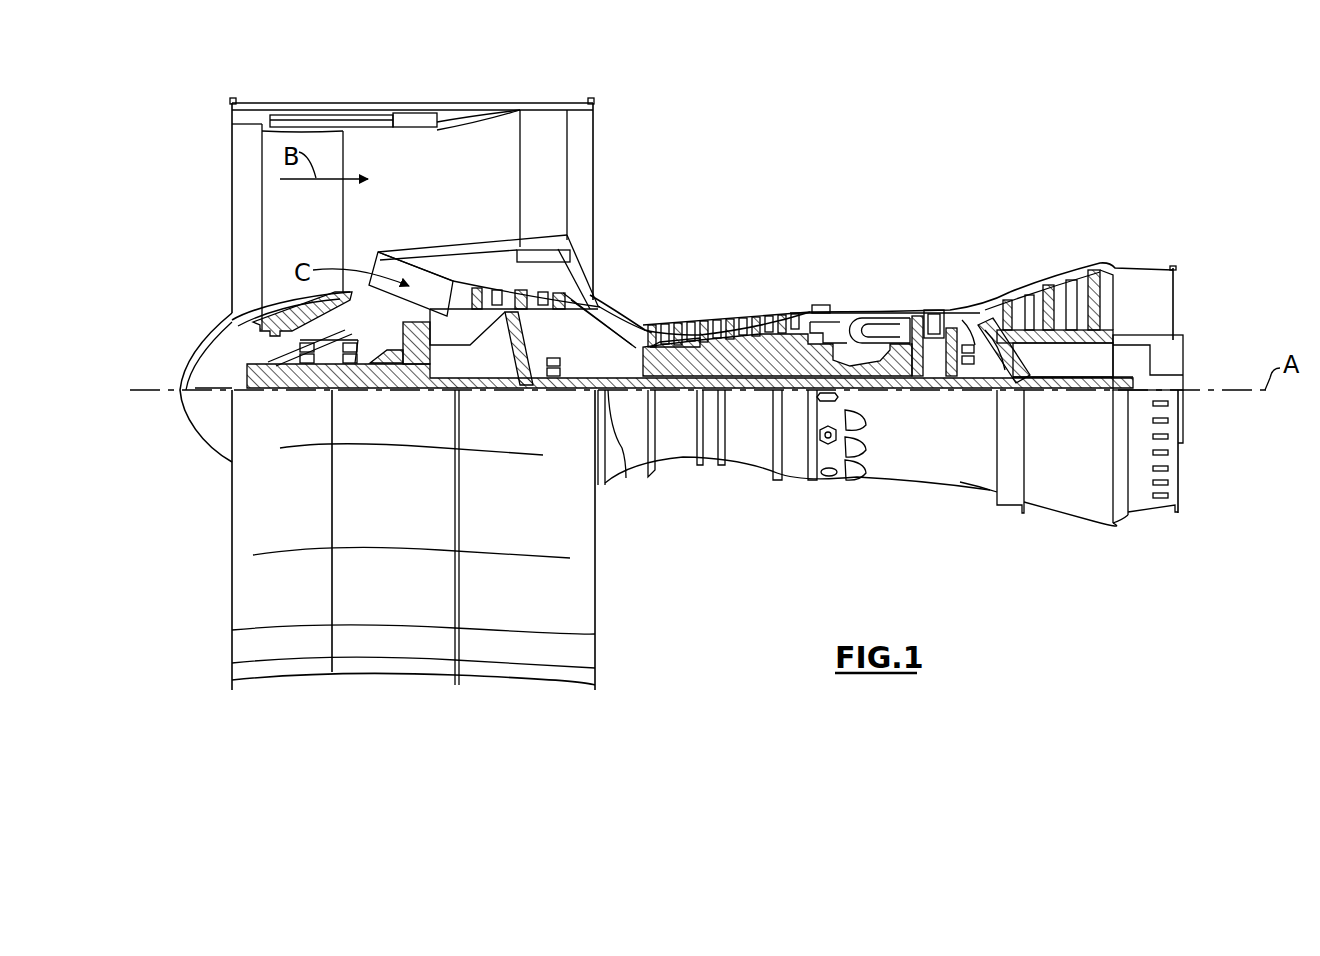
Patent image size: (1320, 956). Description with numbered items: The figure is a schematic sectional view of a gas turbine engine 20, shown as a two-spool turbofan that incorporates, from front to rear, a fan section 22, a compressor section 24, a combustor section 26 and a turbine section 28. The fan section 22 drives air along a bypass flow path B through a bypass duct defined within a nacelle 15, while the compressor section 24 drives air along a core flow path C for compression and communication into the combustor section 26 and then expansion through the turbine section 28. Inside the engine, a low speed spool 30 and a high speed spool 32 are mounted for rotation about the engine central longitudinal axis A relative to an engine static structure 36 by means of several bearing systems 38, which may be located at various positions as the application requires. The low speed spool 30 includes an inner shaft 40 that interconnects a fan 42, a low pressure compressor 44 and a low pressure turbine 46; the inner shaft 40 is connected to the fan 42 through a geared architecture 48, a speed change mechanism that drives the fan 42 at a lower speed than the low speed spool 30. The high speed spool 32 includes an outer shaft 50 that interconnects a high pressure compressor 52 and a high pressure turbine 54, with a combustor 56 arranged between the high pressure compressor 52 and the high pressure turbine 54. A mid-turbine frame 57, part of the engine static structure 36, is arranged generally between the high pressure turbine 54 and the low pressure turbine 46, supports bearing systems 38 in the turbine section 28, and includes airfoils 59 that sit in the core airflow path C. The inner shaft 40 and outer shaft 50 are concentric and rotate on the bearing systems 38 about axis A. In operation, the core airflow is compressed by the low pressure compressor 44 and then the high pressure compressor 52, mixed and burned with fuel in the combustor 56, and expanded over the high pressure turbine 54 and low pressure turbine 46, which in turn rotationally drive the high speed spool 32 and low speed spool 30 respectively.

The nacelle 15 is at (411, 112).
The gas turbine engine 20 is at (920, 119).
The fan section 22 is at (345, 92).
The compressor section 24 is at (642, 292).
The combustor section 26 is at (868, 278).
The turbine section 28 is at (1012, 248).
The low speed spool 30 is at (750, 400).
The high speed spool 32 is at (790, 353).
The engine static structure 36 is at (792, 486).
The bearing systems 38 is at (553, 390).
The inner shaft 40 is at (625, 400).
The fan 42 is at (319, 234).
The low pressure compressor 44 is at (517, 297).
The low pressure turbine 46 is at (1058, 283).
The geared architecture 48 is at (414, 378).
The outer shaft 50 is at (875, 382).
The high pressure compressor 52 is at (726, 355).
The high pressure turbine 54 is at (930, 342).
The combustor 56 is at (862, 332).
The mid-turbine frame 57 is at (977, 300).
The airfoils 59 is at (975, 325).